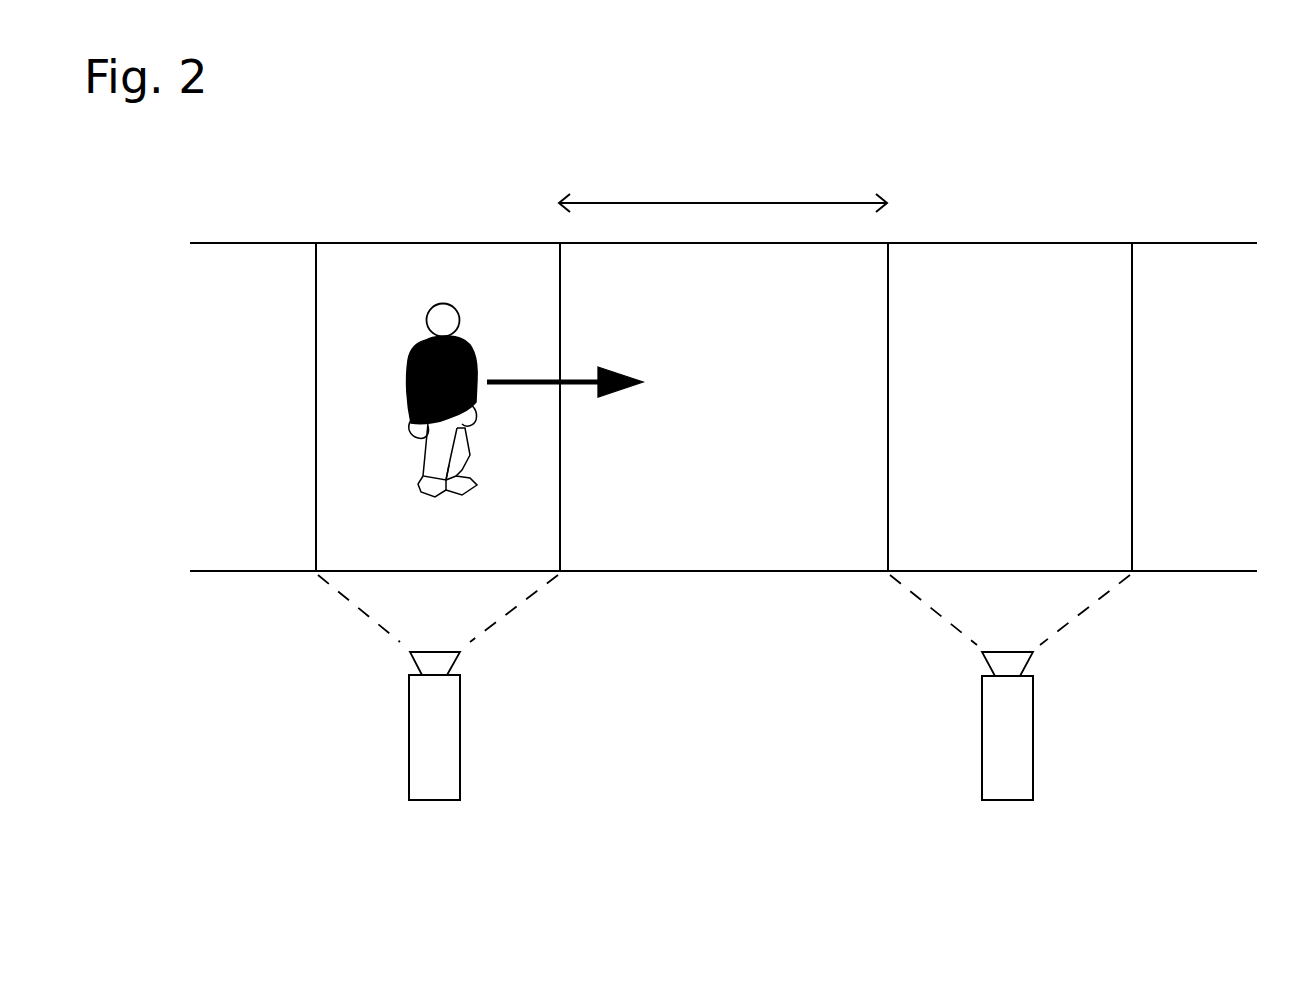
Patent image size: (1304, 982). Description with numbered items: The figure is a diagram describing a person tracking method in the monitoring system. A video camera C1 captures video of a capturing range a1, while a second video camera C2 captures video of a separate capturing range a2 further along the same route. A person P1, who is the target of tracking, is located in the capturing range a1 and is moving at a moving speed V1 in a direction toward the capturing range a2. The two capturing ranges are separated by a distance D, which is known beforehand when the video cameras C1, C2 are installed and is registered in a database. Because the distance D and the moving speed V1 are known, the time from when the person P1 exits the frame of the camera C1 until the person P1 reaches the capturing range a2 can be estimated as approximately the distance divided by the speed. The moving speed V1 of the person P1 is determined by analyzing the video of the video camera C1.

The capturing range a1 is at (352, 243).
The capturing range a2 is at (1006, 243).
The person P1 is at (447, 303).
The distance D is at (723, 188).
The moving speed V1 is at (565, 371).
The video camera C1 is at (433, 800).
The video camera C2 is at (1006, 800).